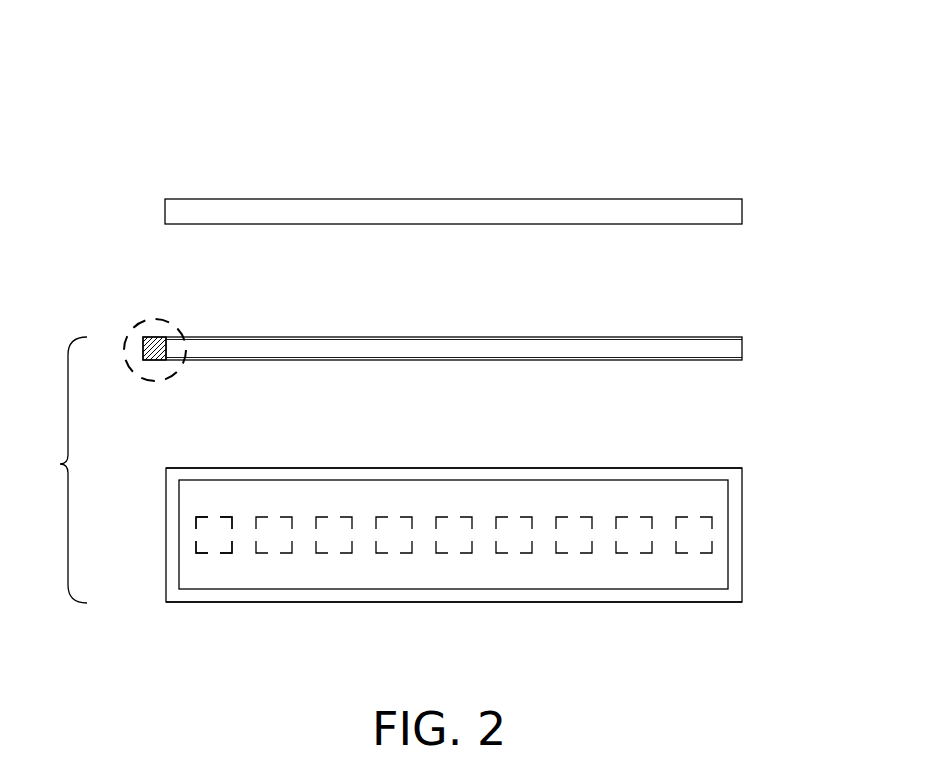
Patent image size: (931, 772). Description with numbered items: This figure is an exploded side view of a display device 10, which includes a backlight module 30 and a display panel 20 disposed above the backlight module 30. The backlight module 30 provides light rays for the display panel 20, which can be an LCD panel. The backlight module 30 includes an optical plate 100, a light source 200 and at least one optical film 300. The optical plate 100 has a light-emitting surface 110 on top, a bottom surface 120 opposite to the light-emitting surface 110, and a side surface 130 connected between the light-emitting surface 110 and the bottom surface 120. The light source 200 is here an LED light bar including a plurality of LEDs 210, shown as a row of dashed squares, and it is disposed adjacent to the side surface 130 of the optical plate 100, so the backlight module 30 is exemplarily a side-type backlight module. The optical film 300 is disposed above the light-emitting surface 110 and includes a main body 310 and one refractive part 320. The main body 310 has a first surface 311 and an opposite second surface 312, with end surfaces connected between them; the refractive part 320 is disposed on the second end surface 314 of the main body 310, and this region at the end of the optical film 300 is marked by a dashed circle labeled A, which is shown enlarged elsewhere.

The display device 10 is at (742, 111).
The display panel 20 is at (182, 212).
The backlight module 30 is at (62, 465).
The optical film 300 is at (533, 315).
The main body 310 is at (503, 349).
The first surface 311 is at (663, 337).
The second surface 312 is at (663, 360).
The second end surface 314 is at (166, 350).
The refractive part 320 is at (144, 351).
The enlarged region A is at (134, 329).
The optical plate 100 is at (533, 443).
The light-emitting surface 110 is at (662, 468).
The bottom surface 120 is at (662, 602).
The side surface 130 is at (736, 535).
The light source 200 is at (365, 558).
The LEDs 210 is at (215, 535).